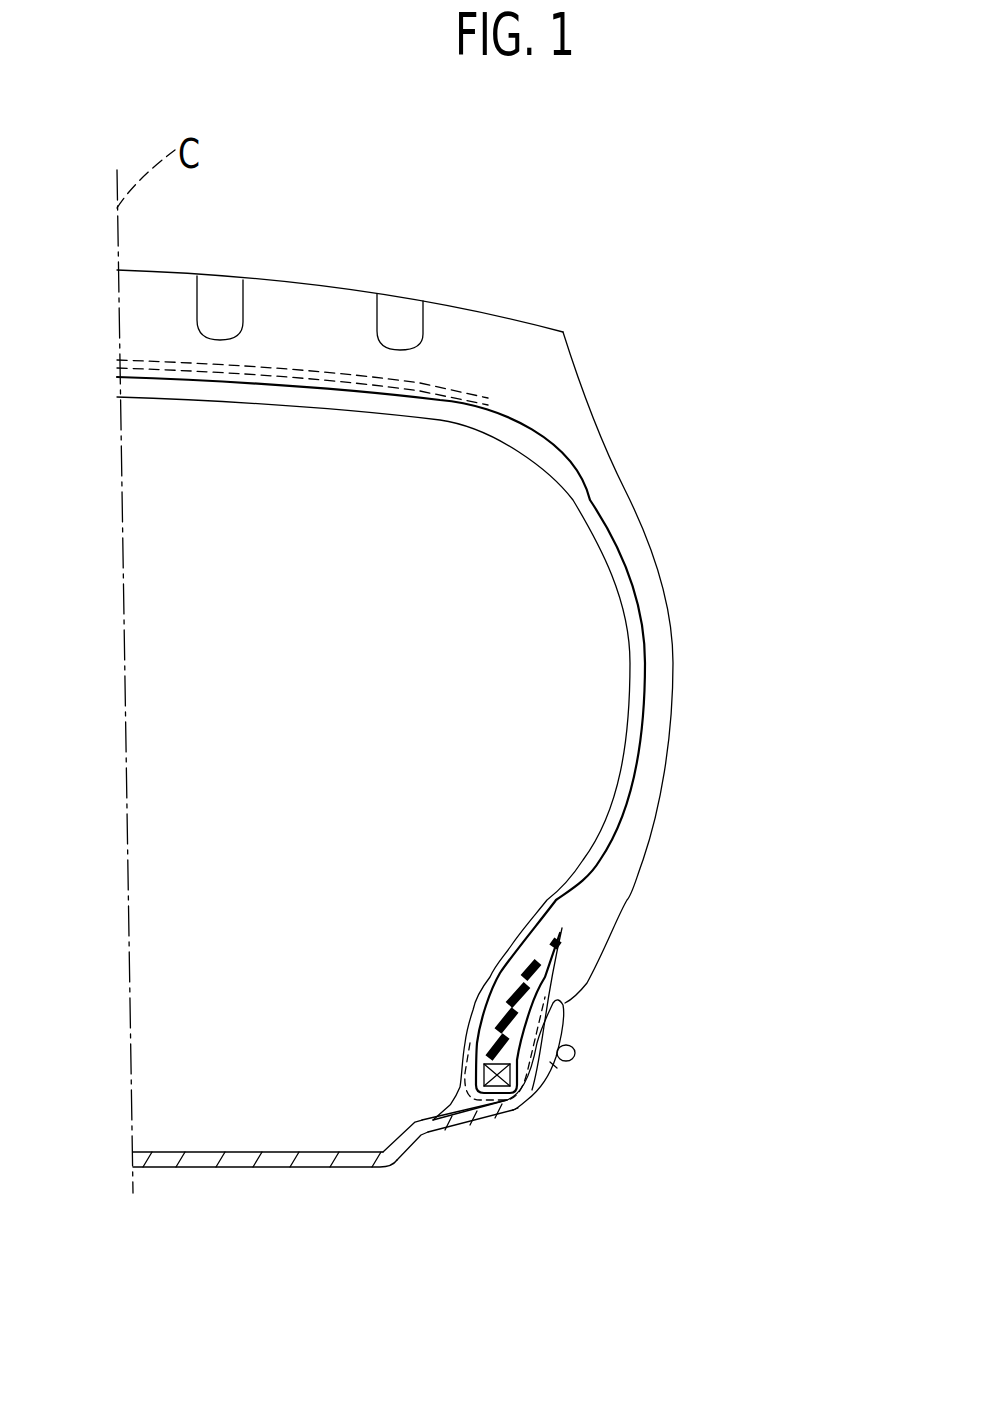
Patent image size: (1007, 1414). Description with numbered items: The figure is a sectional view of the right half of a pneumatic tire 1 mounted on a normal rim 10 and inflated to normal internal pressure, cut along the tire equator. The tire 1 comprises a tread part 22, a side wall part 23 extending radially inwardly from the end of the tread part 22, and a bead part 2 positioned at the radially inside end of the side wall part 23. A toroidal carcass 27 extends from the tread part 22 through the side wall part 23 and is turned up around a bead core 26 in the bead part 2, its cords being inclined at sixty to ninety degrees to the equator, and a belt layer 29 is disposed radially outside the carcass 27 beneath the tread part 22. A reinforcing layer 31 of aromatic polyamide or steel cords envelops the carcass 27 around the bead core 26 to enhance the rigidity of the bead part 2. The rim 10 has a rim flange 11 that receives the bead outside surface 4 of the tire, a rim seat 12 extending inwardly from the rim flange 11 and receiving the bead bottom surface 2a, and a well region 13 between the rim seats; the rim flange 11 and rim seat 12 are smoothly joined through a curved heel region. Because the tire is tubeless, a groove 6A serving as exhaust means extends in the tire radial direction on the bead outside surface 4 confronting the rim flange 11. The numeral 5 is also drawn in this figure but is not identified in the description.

The pneumatic tire 1 is at (466, 697).
The bead part 2 is at (610, 1124).
The bead bottom surface 2a is at (521, 1104).
The bead outside surface 4 is at (548, 1078).
The rim protector 5 is at (576, 1052).
The groove 6A is at (555, 1066).
The normal rim 10 is at (423, 1182).
The rim flange 11 is at (551, 1072).
The rim seat 12 is at (447, 1125).
The well region 13 is at (263, 1168).
The tread part 22 is at (316, 241).
The side wall part 23 is at (697, 692).
The bead core 26 is at (482, 1067).
The carcass 27 is at (645, 663).
The belt layer 29 is at (428, 390).
The reinforcing layer 31 is at (495, 1104).